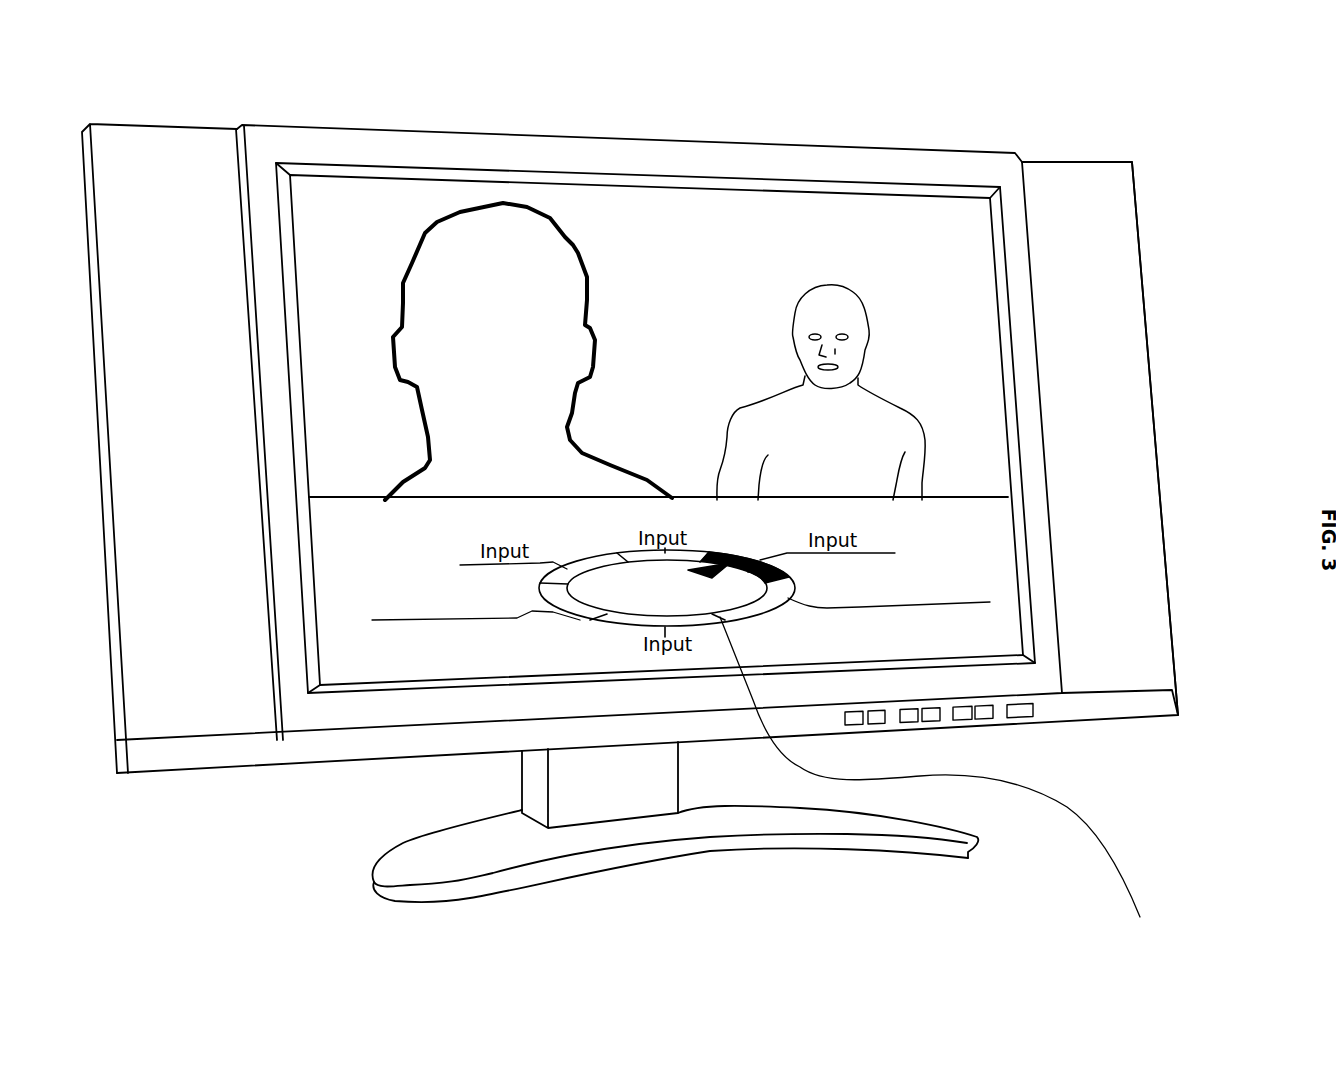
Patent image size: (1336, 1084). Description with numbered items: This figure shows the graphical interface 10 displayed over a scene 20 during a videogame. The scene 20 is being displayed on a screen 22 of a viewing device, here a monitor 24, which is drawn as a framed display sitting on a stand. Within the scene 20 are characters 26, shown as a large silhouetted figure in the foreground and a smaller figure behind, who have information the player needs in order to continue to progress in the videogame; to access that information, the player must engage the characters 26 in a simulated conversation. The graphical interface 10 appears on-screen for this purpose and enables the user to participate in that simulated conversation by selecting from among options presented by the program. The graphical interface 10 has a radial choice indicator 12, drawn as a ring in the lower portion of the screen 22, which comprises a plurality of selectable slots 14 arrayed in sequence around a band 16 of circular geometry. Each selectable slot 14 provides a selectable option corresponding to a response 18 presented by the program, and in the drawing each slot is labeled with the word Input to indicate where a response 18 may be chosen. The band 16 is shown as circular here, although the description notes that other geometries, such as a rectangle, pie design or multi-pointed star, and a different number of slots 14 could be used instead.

The graphical interface 10 is at (1003, 537).
The radial choice indicator 12 is at (608, 627).
The selectable slot 14 is at (938, 782).
The band 16 is at (577, 614).
The response 18 is at (943, 592).
The scene 20 is at (647, 238).
The screen 22 is at (774, 190).
The monitor 24 is at (1055, 182).
The characters 26 is at (475, 247).